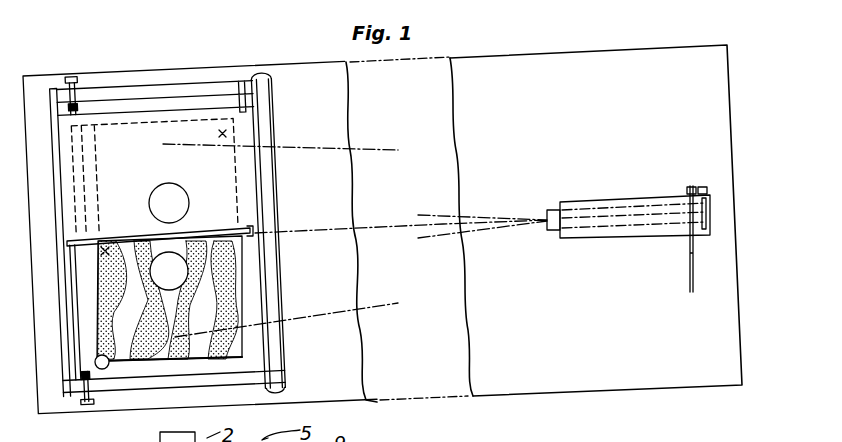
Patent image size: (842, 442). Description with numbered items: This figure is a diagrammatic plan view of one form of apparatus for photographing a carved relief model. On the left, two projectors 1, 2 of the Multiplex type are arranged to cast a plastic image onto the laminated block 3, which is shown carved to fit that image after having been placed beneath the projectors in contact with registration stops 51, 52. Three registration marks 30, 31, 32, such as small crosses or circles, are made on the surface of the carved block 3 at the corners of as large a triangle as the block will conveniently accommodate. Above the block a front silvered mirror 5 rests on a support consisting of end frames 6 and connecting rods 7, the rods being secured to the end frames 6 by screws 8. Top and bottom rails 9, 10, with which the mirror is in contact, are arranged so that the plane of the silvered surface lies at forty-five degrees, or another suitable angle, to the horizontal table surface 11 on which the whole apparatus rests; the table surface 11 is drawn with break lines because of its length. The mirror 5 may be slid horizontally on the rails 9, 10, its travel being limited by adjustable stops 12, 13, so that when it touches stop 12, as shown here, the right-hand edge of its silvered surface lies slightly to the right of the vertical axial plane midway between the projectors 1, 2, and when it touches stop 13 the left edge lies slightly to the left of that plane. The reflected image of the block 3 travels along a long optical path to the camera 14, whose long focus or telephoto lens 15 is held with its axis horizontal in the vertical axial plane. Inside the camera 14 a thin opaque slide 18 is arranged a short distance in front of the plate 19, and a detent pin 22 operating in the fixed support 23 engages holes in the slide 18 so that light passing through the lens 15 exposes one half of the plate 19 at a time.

The projector 1 is at (190, 200).
The projector 2 is at (176, 289).
The laminated block 3 is at (125, 355).
The front silvered mirror 5 is at (160, 202).
The end frame 6 is at (145, 95).
The connecting rod 7 is at (266, 200).
The screw 8 is at (258, 80).
The top rail 9 is at (248, 277).
The bottom rail 10 is at (78, 393).
The horizontal table surface 11 is at (363, 347).
The adjustable stop 12 is at (71, 80).
The adjustable stop 13 is at (84, 404).
The camera 14 is at (588, 200).
The lens 15 is at (548, 233).
The opaque slide 18 is at (690, 186).
The plate 19 is at (708, 207).
The detent pin 22 is at (707, 187).
The fixed support 23 is at (697, 186).
The registration mark 30 is at (176, 342).
The registration mark 31 is at (100, 256).
The registration mark 32 is at (227, 134).
The registration stop 51 is at (95, 363).
The registration stop 52 is at (86, 125).